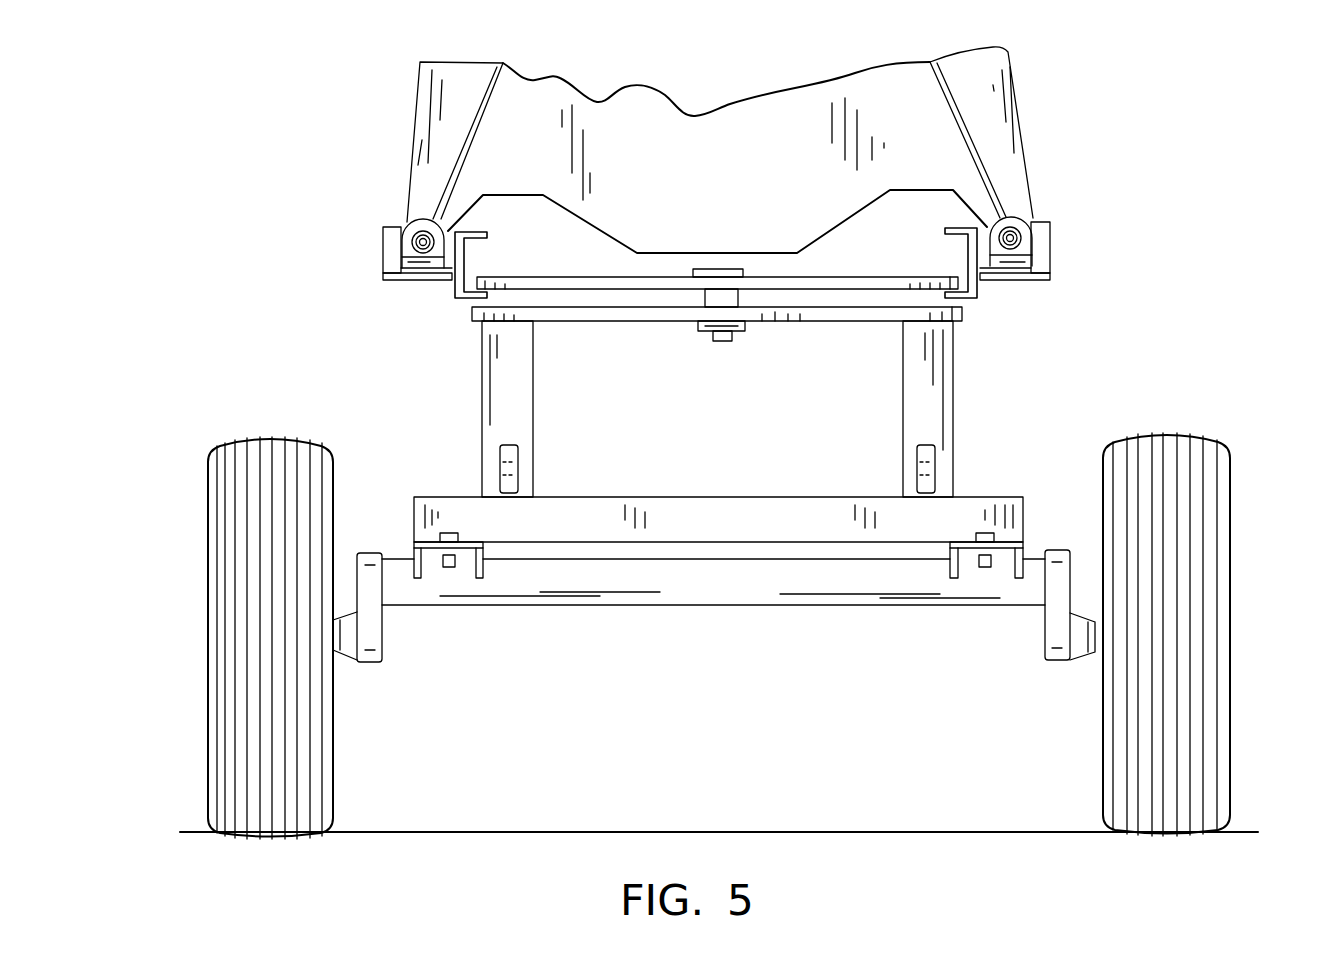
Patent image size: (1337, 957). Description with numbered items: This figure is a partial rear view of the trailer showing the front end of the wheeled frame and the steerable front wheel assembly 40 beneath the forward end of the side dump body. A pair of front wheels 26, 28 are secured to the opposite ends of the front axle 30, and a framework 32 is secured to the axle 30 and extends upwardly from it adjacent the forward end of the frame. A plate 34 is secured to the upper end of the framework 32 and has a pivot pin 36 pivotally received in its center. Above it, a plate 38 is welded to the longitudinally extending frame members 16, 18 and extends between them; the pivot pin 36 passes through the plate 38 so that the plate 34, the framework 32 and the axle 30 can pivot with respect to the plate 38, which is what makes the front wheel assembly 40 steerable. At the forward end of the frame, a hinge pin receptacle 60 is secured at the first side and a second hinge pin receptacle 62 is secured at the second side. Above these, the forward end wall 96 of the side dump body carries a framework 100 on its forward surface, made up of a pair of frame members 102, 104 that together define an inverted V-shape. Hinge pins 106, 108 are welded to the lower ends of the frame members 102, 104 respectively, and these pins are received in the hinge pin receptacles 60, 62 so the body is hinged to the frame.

The frame member 16 is at (966, 228).
The frame member 18 is at (453, 278).
The front wheel 26 is at (1198, 493).
The front wheel 28 is at (258, 457).
The front axle 30 is at (715, 577).
The framework 32 is at (952, 380).
The plate 34 is at (962, 312).
The pivot pin 36 is at (720, 341).
The plate 38 is at (557, 289).
The steerable front wheel assembly 40 is at (1017, 475).
The hinge pin receptacle 60 is at (1017, 262).
The hinge pin receptacle 62 is at (388, 267).
The forward end wall 96 is at (724, 175).
The framework 100 is at (930, 132).
The frame member 102 is at (975, 130).
The frame member 104 is at (470, 138).
The hinge pin 106 is at (1022, 234).
The hinge pin 108 is at (413, 236).